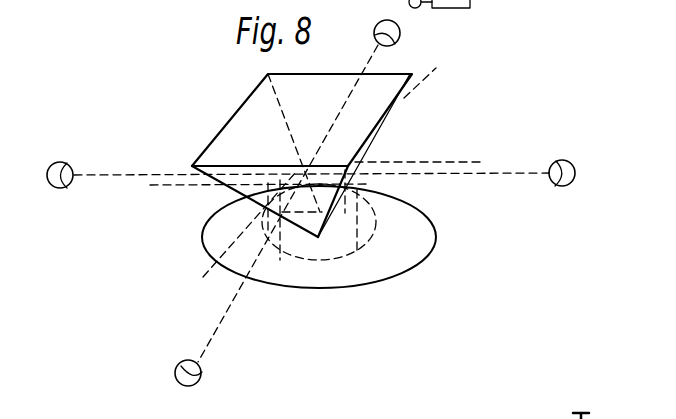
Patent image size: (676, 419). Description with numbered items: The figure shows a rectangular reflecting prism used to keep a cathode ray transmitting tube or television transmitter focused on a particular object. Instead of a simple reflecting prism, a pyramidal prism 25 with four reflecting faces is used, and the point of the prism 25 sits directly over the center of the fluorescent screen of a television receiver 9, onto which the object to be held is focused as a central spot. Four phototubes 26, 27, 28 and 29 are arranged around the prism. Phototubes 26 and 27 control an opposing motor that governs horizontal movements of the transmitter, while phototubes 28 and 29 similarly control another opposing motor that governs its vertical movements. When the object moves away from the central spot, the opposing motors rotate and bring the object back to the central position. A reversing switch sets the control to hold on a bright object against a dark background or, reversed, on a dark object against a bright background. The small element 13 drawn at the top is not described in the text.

The television receiver 9 is at (397, 268).
The light source / emitter 13 is at (416, 8).
The pyramidal prism 25 is at (371, 142).
The phototube 26 is at (563, 160).
The phototube 27 is at (62, 162).
The phototube 28 is at (400, 38).
The phototube 29 is at (189, 386).